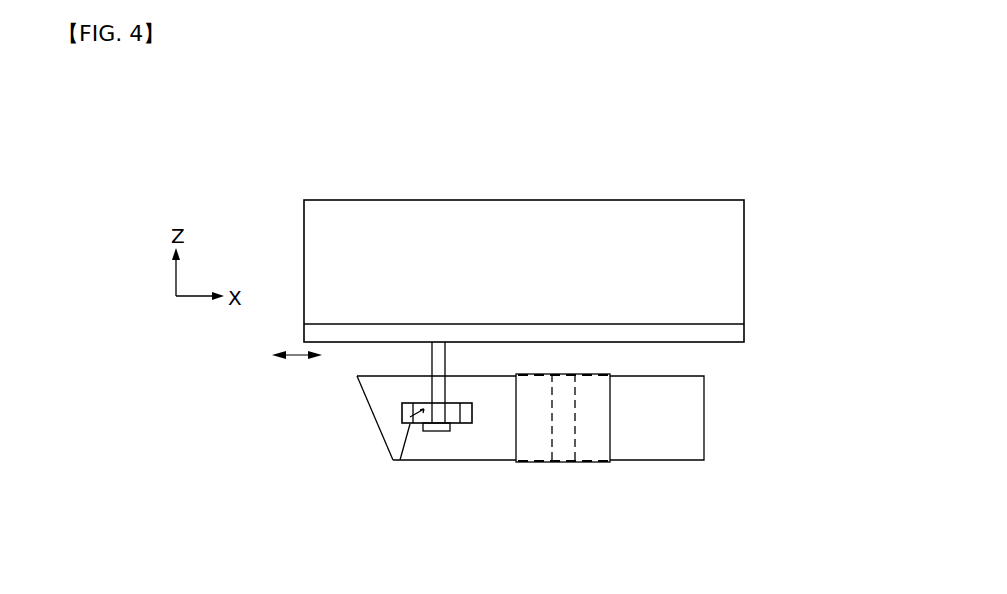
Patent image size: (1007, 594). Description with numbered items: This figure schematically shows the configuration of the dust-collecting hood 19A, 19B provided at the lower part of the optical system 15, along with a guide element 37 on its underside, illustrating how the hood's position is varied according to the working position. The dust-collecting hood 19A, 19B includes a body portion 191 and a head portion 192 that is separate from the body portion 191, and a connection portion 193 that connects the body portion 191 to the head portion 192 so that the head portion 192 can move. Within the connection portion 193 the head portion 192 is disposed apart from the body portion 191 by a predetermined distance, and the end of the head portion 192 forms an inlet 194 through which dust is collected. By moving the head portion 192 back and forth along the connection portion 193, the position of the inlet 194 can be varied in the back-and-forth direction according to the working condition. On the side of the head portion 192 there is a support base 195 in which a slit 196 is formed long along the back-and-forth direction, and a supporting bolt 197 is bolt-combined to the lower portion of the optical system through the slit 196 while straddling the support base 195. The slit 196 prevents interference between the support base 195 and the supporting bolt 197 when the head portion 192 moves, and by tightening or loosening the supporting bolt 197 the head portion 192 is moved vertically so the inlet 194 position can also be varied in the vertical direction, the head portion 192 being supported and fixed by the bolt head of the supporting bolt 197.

The display module 15 is at (544, 231).
The guide rail 37 is at (735, 335).
The dust-collecting hood 19A is at (574, 432).
The dust-collecting hood 19B is at (500, 442).
The body portion 191 is at (672, 448).
The head portion 192 is at (480, 450).
The connection portion 193 is at (563, 463).
The inlet 194 is at (361, 387).
The support base 195 is at (406, 410).
The slit 196 is at (400, 460).
The supporting bolt 197 is at (433, 431).